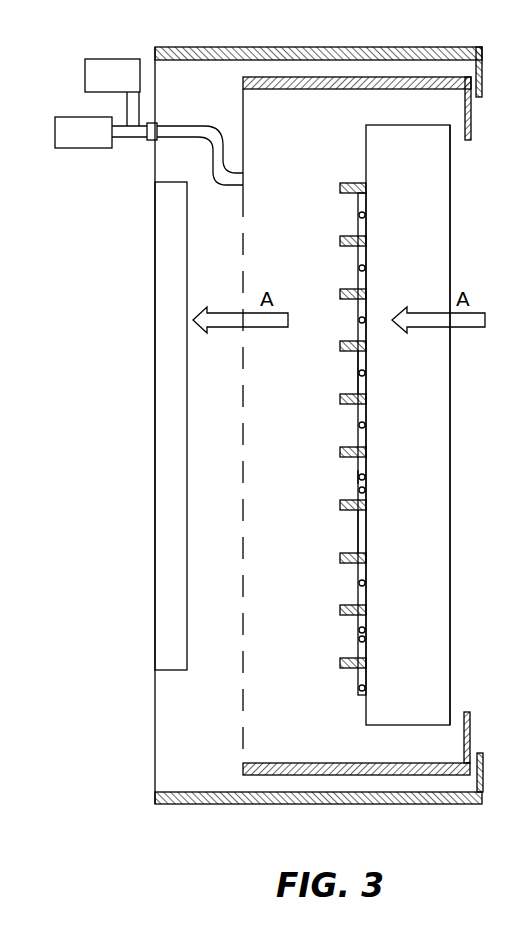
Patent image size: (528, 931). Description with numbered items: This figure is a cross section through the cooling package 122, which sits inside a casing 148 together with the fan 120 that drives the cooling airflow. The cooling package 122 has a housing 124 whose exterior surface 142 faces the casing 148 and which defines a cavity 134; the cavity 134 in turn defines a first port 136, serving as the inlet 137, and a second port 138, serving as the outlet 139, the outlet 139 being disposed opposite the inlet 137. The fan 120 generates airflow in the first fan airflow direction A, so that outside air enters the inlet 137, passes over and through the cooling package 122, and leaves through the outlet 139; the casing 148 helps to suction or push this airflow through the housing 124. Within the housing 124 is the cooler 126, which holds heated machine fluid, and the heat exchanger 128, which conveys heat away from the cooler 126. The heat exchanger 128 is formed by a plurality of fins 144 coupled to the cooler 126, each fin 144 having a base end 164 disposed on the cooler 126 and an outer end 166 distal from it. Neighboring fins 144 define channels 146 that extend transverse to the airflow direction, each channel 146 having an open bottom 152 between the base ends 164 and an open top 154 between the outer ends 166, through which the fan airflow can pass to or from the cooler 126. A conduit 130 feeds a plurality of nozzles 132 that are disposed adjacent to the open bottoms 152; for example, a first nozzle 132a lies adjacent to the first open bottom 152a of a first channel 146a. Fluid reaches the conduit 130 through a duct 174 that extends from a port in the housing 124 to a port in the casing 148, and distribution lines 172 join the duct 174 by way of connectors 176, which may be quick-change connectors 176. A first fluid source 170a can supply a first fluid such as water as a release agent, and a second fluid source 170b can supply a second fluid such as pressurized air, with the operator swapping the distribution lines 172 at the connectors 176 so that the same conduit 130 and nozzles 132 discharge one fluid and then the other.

The fan 120 is at (175, 520).
The cooling package 122 is at (233, 72).
The housing 124 is at (300, 768).
The cooler 126 is at (423, 437).
The heat exchanger 128 is at (333, 166).
The conduit 130 is at (343, 235).
The nozzles 132 is at (359, 215).
The first nozzle 132a is at (367, 477).
The cavity 134 is at (277, 707).
The first port 136 is at (456, 172).
The inlet 137 is at (456, 213).
The second port 138 is at (265, 258).
The outlet 139 is at (280, 598).
The exterior surface 142 is at (410, 773).
The fins 144 is at (340, 450).
The channels 146 is at (357, 583).
The first channel 146a is at (342, 477).
The casing 148 is at (307, 48).
The open bottom 152 is at (365, 376).
The first open bottom 152a is at (367, 490).
The open top 154 is at (345, 375).
The base end 164 is at (367, 542).
The outer end 166 is at (340, 553).
The first fluid source 170a is at (83, 132).
The second fluid source 170b is at (112, 92).
The distribution lines 172 is at (137, 132).
The duct 174 is at (173, 132).
The connectors 176 is at (152, 147).